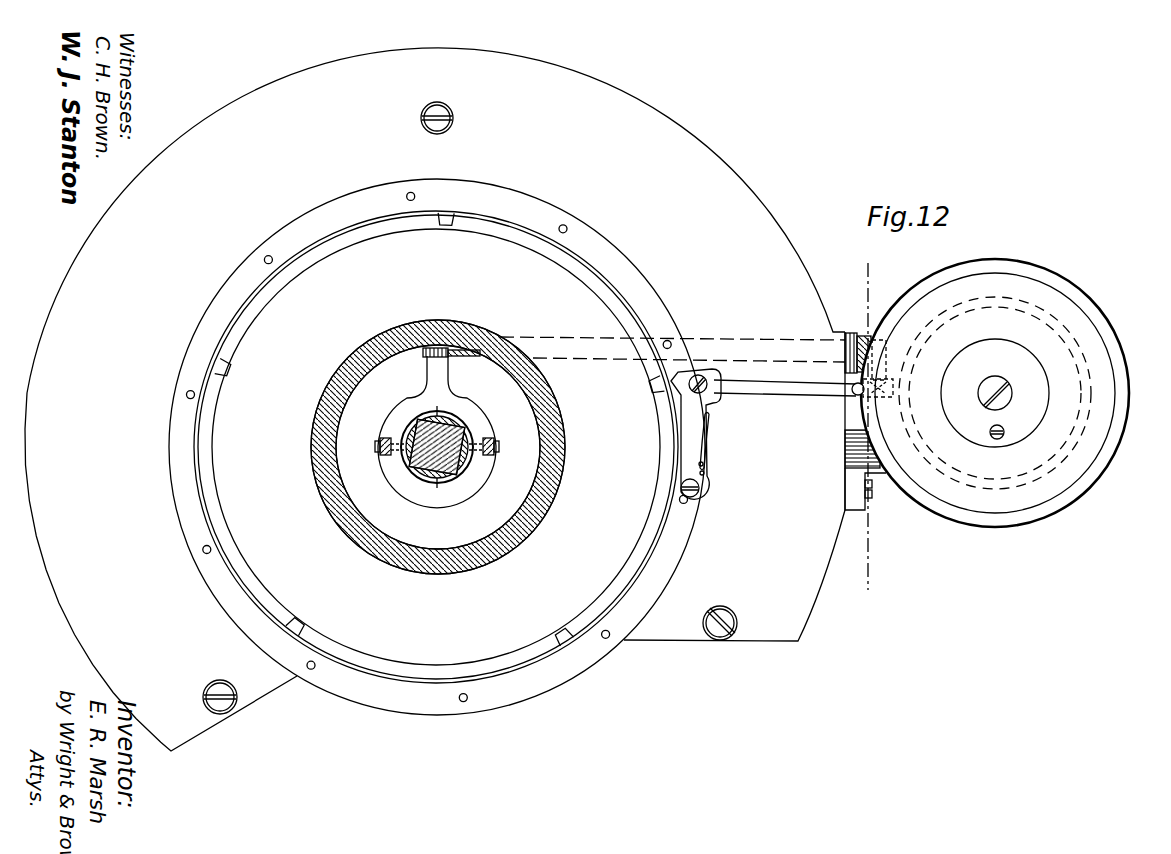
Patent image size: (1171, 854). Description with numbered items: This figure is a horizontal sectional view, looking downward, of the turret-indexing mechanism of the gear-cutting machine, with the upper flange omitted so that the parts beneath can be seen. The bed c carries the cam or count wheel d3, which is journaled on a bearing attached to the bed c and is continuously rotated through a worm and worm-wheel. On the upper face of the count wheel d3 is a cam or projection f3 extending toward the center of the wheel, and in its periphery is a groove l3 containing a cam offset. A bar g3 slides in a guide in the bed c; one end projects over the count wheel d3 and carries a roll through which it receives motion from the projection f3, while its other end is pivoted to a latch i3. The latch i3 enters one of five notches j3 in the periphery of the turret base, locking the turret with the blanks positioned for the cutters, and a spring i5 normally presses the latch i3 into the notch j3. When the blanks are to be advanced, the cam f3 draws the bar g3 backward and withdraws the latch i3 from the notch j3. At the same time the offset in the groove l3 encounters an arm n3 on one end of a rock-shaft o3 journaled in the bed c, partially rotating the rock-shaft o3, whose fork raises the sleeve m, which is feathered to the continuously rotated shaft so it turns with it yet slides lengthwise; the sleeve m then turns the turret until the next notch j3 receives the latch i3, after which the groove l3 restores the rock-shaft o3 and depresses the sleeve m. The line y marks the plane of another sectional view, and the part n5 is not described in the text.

The bed c is at (435, 399).
The notch j3 is at (670, 382).
The peripheral groove l3 is at (421, 389).
The rock-shaft o3 is at (872, 318).
The sleeve m is at (423, 470).
The bar g3 is at (784, 386).
The spring i5 is at (703, 428).
The latch i3 is at (696, 434).
The arm n3 is at (893, 389).
The guide n5 is at (876, 387).
The cam or projection f3 is at (868, 402).
The cam or count wheel d3 is at (995, 393).
The section line y y' y is at (869, 426).